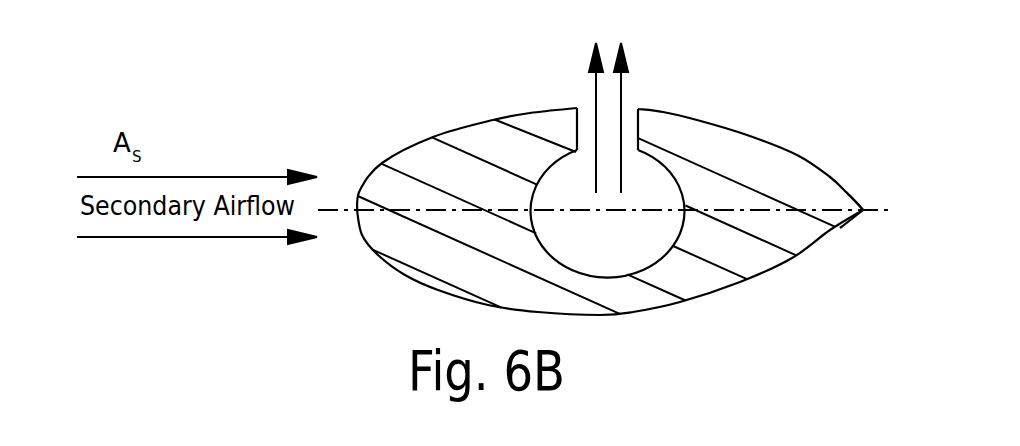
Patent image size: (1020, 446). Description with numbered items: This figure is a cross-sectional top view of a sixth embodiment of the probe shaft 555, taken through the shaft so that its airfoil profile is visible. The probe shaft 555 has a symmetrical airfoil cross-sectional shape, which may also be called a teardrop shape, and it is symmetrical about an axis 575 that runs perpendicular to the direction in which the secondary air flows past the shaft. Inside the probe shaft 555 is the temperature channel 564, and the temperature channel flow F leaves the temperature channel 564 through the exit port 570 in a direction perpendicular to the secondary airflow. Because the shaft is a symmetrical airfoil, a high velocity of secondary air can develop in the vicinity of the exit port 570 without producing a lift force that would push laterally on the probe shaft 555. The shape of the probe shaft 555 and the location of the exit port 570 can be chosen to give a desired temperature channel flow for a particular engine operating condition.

The probe shaft 555 is at (745, 137).
The temperature channel 564 is at (643, 247).
The exit port 570 is at (588, 122).
The axis 575 is at (878, 205).